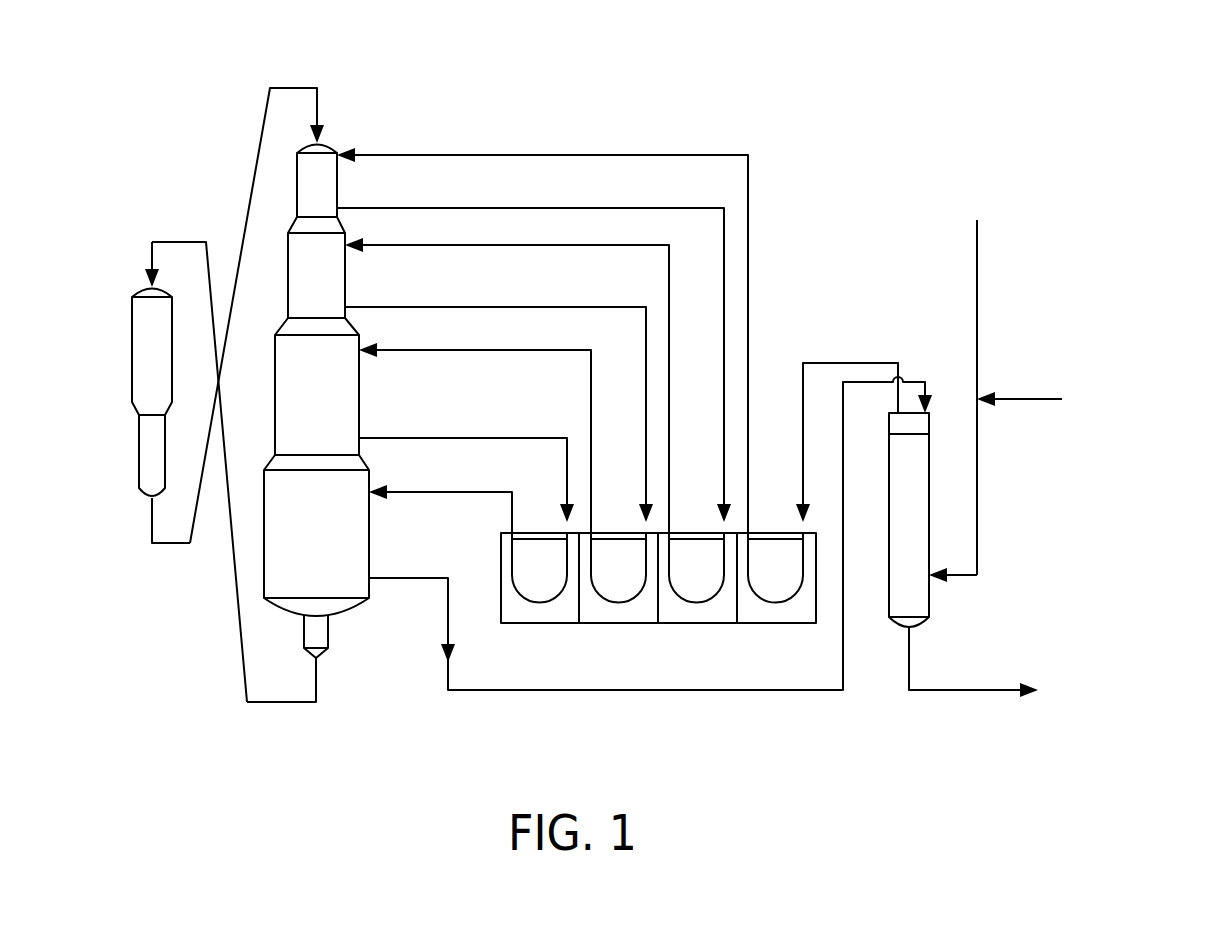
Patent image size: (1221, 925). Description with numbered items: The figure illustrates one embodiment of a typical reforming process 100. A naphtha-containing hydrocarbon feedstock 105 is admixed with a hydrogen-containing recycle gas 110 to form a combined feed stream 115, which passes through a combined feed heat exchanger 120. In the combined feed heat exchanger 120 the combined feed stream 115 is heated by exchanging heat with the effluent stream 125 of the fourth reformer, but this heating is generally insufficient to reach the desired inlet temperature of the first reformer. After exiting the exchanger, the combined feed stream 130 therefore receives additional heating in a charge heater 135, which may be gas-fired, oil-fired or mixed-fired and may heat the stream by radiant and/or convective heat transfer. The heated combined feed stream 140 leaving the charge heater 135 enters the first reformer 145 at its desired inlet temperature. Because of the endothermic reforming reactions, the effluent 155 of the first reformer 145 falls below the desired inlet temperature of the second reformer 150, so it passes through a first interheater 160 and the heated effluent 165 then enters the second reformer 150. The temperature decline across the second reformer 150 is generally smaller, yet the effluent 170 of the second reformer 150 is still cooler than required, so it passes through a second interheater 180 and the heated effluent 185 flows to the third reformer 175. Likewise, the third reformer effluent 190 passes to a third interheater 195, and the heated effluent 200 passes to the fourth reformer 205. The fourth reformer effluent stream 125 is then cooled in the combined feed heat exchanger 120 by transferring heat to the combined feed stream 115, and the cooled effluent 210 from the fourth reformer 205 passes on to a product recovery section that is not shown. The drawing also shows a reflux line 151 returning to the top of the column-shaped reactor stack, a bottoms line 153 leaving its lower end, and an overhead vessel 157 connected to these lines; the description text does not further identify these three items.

The reforming process 100 is at (1100, 77).
The naphtha-containing hydrocarbon feedstock 105 is at (977, 241).
The hydrogen-containing recycle gas 110 is at (1045, 397).
The combined feed stream 115 is at (977, 537).
The combined feed heat exchanger 120 is at (932, 488).
The effluent stream of the fourth reformer 125 is at (640, 691).
The combined feed stream 130 is at (847, 362).
The charge heater 135 is at (774, 592).
The combined feed stream 140 is at (661, 155).
The first reformer 145 is at (336, 183).
The second reformer 150 is at (345, 277).
The reflux line 151 is at (295, 88).
The bottoms line 153 is at (282, 705).
The effluent of the first reformer 155 is at (612, 208).
The overhead receiver 157 is at (132, 358).
The first interheater 160 is at (695, 592).
The heated effluent 165 is at (570, 245).
The effluent of the second reformer 170 is at (555, 307).
The third reformer 175 is at (359, 395).
The second interheater 180 is at (617, 592).
The heated effluent 185 is at (520, 350).
The third reformer effluent 190 is at (485, 438).
The third interheater 195 is at (538, 592).
The heated effluent 200 is at (435, 492).
The fourth reformer 205 is at (368, 540).
The cooled effluent 210 is at (973, 693).